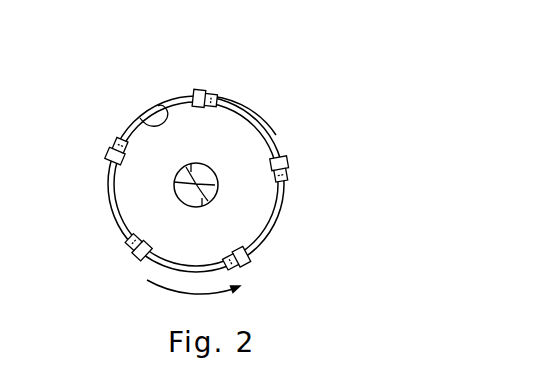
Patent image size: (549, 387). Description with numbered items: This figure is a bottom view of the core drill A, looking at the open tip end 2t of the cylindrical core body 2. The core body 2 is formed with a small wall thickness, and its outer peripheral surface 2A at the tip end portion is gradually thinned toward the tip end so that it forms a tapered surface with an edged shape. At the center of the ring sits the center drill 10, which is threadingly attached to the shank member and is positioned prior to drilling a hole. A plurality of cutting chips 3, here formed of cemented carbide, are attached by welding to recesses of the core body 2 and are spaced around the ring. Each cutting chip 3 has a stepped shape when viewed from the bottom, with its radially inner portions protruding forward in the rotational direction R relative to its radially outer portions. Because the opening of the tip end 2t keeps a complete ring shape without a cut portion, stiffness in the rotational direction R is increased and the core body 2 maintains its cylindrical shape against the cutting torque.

The core body 2 is at (284, 220).
The outer peripheral surface 2A is at (262, 133).
The tip end 2t is at (140, 118).
The cutting chip 3 is at (202, 89).
The center drill 10 is at (180, 183).
The core drill A is at (356, 175).
The rotational direction R is at (160, 290).